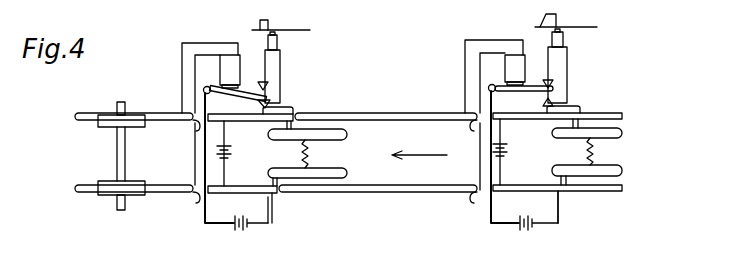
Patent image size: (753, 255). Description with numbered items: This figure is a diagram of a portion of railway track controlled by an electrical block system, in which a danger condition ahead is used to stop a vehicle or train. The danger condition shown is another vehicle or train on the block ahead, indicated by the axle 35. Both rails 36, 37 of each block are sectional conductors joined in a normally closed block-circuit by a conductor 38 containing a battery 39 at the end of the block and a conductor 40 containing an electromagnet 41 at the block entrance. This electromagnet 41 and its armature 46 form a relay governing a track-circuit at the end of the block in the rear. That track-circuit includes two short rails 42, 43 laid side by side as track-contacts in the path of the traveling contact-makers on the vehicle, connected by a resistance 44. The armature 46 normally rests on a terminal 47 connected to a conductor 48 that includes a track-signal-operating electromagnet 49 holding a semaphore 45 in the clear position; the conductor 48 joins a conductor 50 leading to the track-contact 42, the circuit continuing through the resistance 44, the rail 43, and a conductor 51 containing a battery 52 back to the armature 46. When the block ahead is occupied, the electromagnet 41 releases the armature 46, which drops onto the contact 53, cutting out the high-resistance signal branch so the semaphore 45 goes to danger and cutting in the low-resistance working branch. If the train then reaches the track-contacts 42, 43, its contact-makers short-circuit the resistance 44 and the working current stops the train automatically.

The axle 35 is at (117, 152).
The rail 36 is at (392, 109).
The rail 37 is at (397, 193).
The conductor 38 is at (226, 177).
The battery 39 is at (231, 152).
The conductor 40 is at (195, 161).
The electromagnet 41 is at (226, 62).
The short rail 42 is at (327, 128).
The short rail 43 is at (327, 178).
The resistance 44 is at (309, 152).
The semaphore 45 is at (429, 15).
The armature 46 is at (240, 99).
The terminal 47 is at (261, 82).
The conductor 48 is at (281, 62).
The track-signal-operating electromagnet 49 is at (280, 42).
The conductor 50 is at (287, 108).
The conductor 51 is at (268, 225).
The battery 52 is at (393, 235).
The contact 53 is at (263, 108).